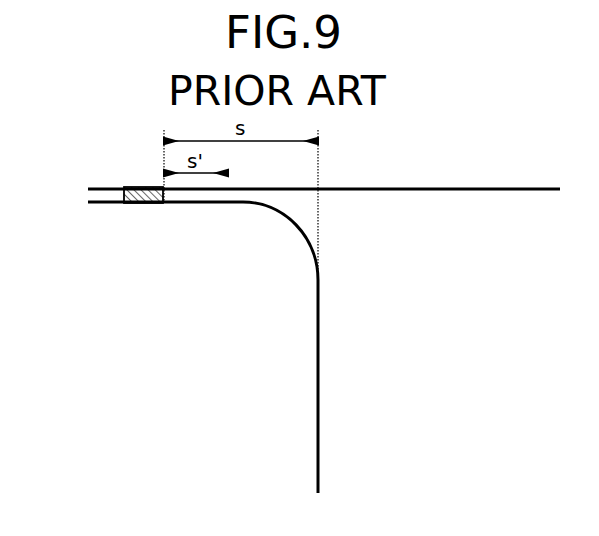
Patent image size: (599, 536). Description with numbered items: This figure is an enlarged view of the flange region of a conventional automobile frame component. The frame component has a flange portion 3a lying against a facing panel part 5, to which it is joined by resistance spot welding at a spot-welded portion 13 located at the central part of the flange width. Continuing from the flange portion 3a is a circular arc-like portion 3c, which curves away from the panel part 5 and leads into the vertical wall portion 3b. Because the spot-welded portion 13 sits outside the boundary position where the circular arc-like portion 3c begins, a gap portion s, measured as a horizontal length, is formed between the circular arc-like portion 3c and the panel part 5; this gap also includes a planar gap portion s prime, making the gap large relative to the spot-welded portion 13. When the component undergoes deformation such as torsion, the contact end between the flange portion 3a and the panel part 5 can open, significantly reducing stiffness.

The panel part 5 is at (446, 189).
The flange portion 3a is at (108, 203).
The vertical wall portion 3b is at (317, 422).
The circular arc-like portion 3c is at (278, 222).
The spot-welded portion 13 is at (143, 203).